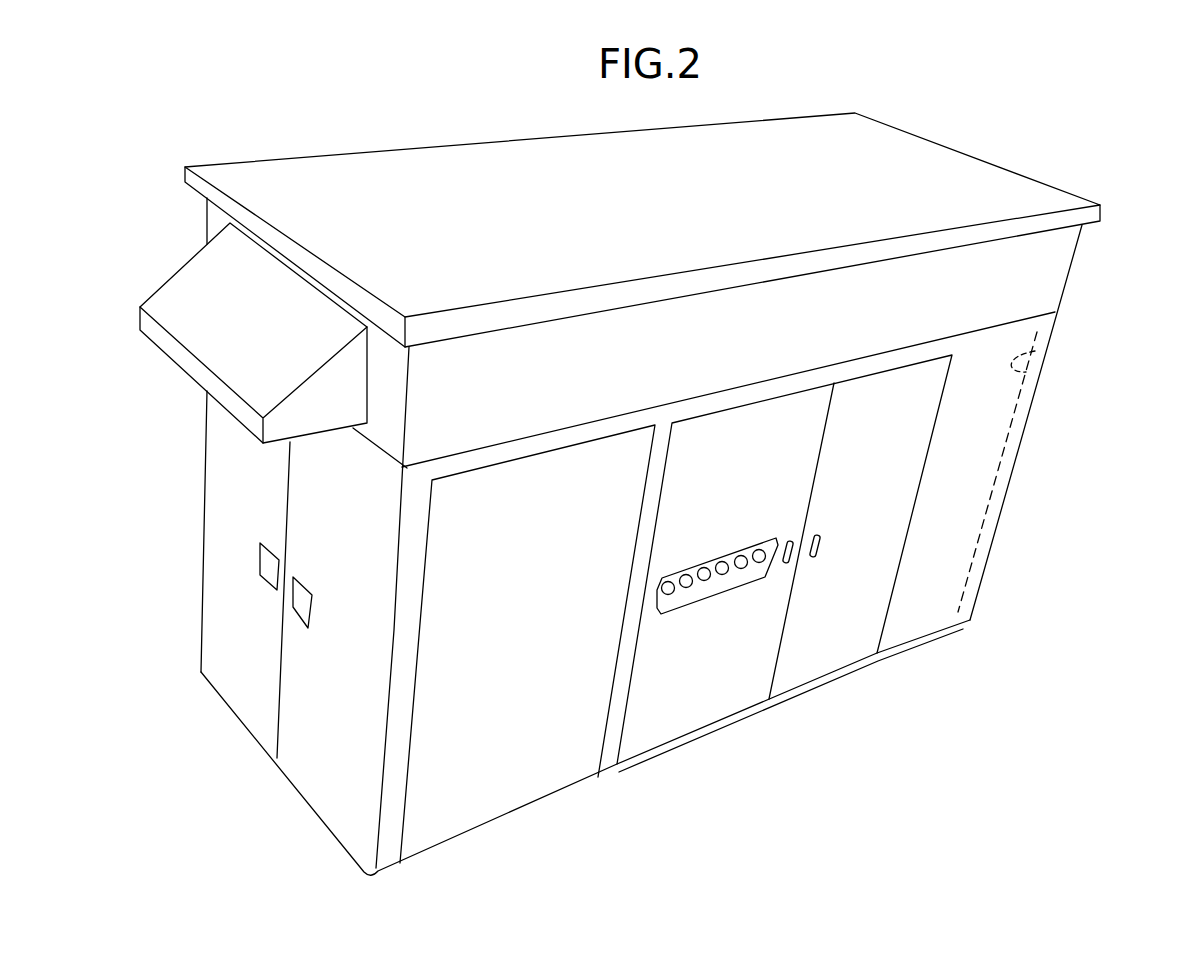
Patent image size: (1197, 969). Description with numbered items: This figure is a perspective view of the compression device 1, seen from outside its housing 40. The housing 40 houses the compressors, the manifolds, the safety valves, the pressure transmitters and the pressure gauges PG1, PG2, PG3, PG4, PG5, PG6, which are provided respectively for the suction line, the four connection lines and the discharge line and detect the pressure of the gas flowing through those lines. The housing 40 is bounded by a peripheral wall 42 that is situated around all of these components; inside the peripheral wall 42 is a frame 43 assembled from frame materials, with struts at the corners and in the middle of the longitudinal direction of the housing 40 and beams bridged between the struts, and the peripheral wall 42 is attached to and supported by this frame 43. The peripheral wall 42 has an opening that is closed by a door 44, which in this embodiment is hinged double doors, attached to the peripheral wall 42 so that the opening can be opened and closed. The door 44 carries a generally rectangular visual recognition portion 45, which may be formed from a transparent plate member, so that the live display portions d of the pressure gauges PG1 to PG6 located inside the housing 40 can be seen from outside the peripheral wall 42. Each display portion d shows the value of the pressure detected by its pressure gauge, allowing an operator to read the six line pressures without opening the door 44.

The compression device 1 is at (992, 138).
The housing 40 is at (1072, 266).
The peripheral wall 42 is at (1003, 407).
The frame 43 is at (1048, 350).
The door 44 is at (775, 485).
The visual recognition portion 45 is at (803, 532).
The display portion d is at (662, 583).
The pressure gauge PG1 is at (668, 595).
The pressure gauge PG2 is at (686, 588).
The pressure gauge PG3 is at (704, 581).
The pressure gauge PG4 is at (722, 575).
The pressure gauge PG5 is at (741, 569).
The pressure gauge PG6 is at (759, 563).